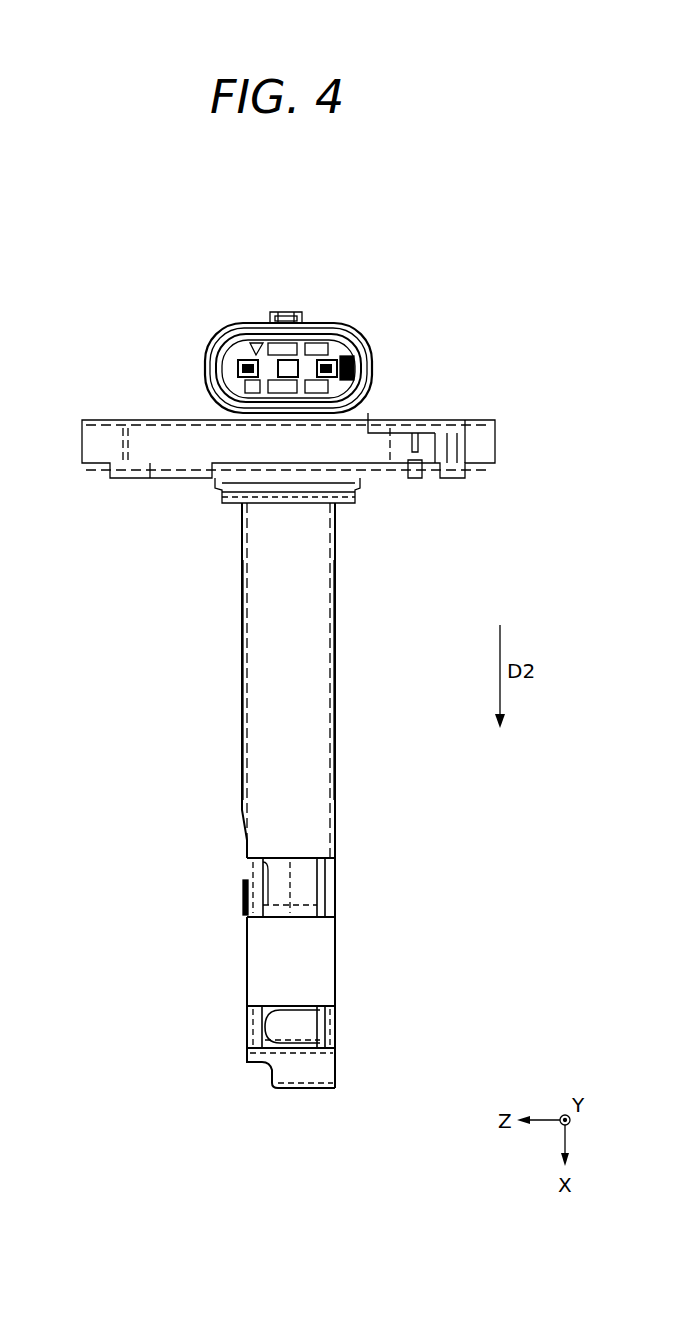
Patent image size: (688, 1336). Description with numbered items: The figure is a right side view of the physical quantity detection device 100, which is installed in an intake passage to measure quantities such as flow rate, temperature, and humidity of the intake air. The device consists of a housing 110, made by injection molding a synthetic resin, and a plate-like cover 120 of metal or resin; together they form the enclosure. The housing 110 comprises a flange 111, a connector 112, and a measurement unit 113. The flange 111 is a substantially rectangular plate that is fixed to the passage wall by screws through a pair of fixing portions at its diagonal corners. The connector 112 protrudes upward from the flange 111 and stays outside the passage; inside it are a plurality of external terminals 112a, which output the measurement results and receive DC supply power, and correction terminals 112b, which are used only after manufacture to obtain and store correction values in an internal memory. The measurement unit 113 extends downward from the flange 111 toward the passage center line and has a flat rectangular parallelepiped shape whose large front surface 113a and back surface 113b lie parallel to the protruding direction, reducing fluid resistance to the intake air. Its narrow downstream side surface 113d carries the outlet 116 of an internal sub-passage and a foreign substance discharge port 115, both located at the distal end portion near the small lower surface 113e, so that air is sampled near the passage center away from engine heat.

The physical quantity detection device 100 is at (128, 298).
The housing 110 is at (238, 725).
The flange 111 is at (476, 415).
The connector 112 is at (322, 323).
The external terminal 112a is at (246, 364).
The correction terminal 112b is at (348, 362).
The measurement unit 113 is at (342, 664).
The front surface 113a is at (241, 628).
The back surface 113b is at (337, 584).
The downstream side surface 113d is at (292, 730).
The lower surface 113e is at (300, 1090).
The foreign substance discharge port 115 is at (300, 1025).
The outlet 116 is at (300, 887).
The cover 120 is at (341, 898).